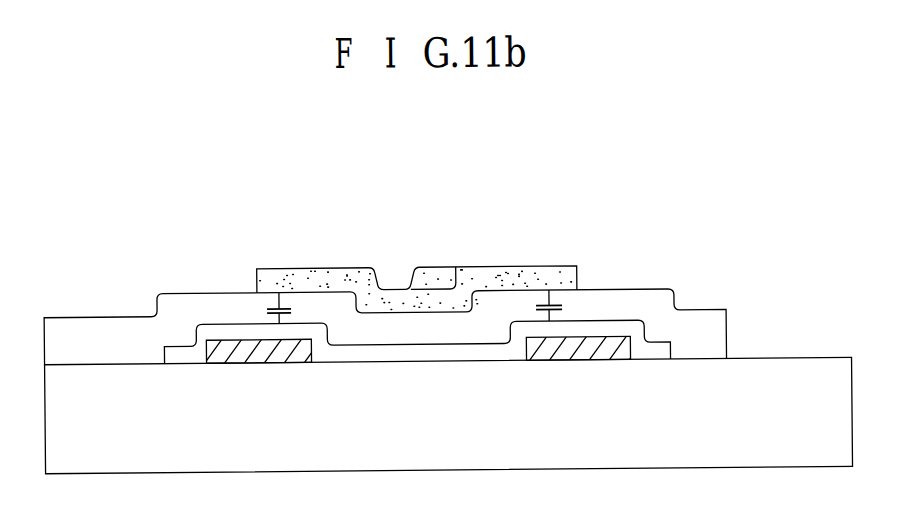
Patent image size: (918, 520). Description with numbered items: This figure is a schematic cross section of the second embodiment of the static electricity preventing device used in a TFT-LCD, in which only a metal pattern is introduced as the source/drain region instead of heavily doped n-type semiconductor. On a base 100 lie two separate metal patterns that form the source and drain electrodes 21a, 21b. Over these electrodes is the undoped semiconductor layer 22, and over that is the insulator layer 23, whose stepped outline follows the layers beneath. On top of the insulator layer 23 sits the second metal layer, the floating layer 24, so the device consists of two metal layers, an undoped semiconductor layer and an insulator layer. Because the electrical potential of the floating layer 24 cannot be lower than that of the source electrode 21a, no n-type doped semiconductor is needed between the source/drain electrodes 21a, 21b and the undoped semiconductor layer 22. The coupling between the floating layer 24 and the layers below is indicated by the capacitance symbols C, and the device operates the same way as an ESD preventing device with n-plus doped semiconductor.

The substrate 100 is at (449, 415).
The source electrode 21a is at (268, 349).
The drain electrode 21b is at (592, 353).
The undoped semiconductor layer 22 is at (421, 350).
The insulator layer 23 is at (632, 302).
The floating metal layer 24 is at (522, 276).
The capacitor C is at (422, 308).